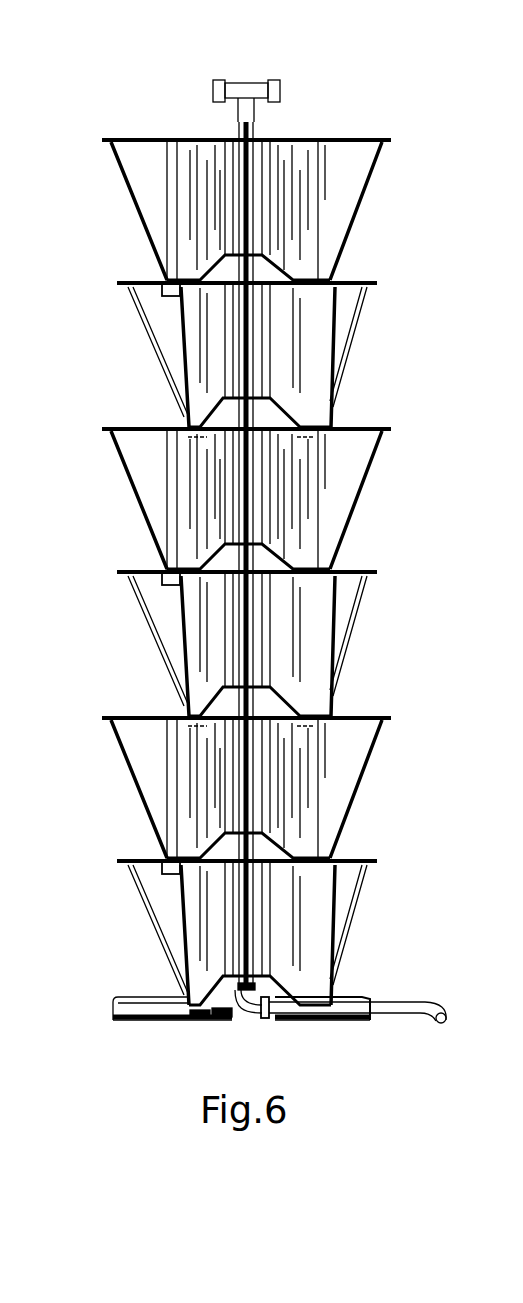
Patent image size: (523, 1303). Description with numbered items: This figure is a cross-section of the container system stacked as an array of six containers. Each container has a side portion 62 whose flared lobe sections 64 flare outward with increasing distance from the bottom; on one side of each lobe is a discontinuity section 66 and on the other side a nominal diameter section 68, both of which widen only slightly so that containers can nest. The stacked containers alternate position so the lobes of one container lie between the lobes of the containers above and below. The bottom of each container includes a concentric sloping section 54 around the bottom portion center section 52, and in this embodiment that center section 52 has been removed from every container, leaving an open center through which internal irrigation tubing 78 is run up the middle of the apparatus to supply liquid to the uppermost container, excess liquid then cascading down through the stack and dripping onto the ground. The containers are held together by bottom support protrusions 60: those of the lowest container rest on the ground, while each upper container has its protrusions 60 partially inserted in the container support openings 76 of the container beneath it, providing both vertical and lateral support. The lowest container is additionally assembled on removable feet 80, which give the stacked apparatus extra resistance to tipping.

The bottom portion center section 52 is at (258, 193).
The bottom portion concentric sloping section 54 is at (200, 257).
The bottom support protrusions 60 is at (236, 471).
The container side portion 62 is at (228, 644).
The container side portion lobe section 64 is at (145, 233).
The container side portion discontinuity section 66 is at (183, 362).
The container side portion nominal diameter section 68 is at (333, 323).
The container support opening 76 is at (163, 297).
The container stack internal irrigation tubing 78 is at (237, 133).
The removable foot 80 is at (117, 997).